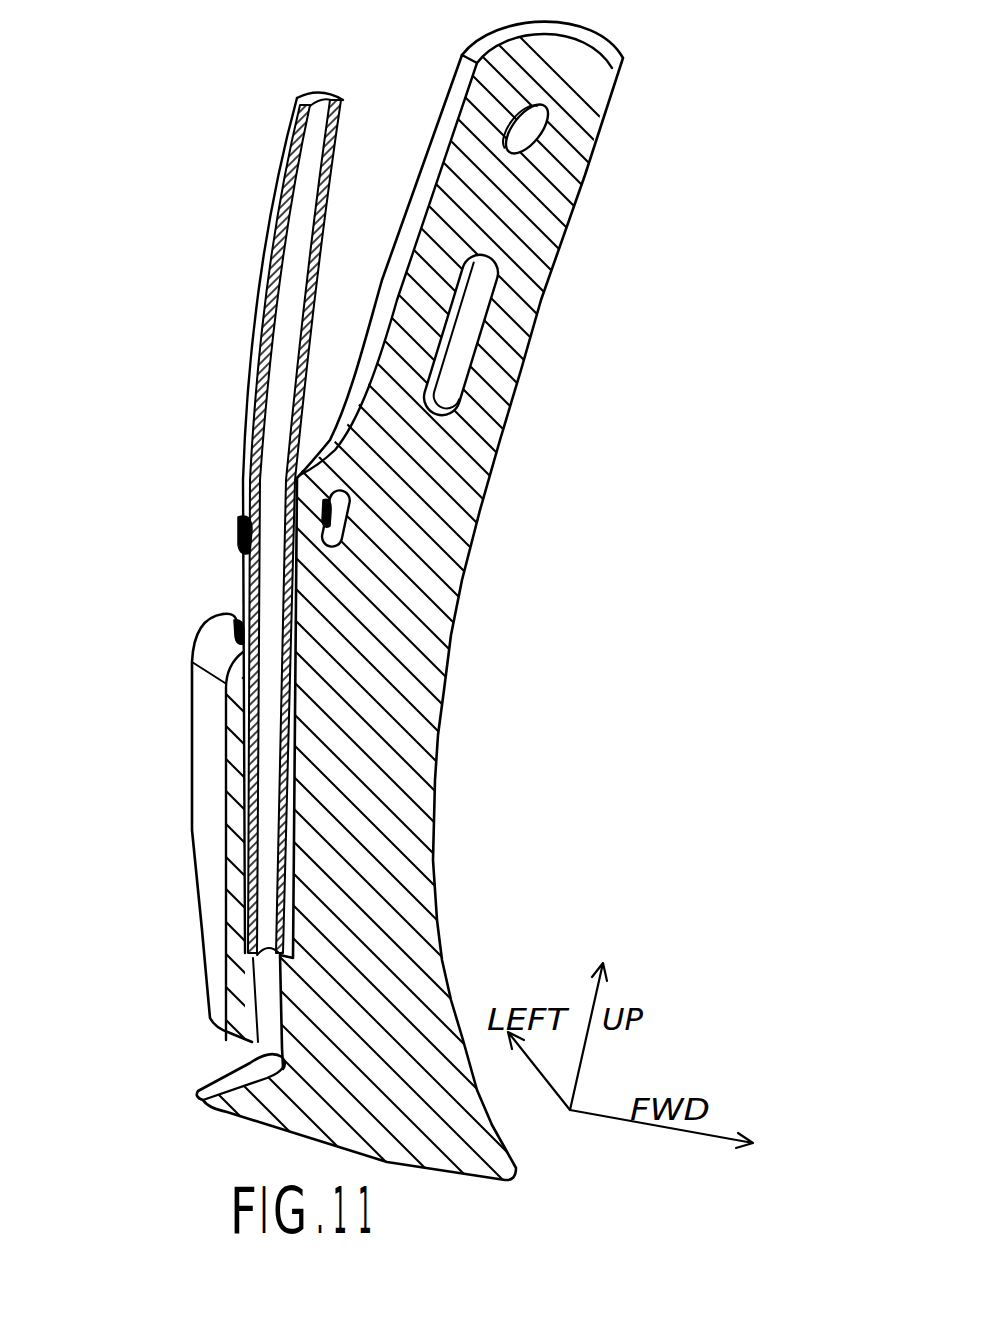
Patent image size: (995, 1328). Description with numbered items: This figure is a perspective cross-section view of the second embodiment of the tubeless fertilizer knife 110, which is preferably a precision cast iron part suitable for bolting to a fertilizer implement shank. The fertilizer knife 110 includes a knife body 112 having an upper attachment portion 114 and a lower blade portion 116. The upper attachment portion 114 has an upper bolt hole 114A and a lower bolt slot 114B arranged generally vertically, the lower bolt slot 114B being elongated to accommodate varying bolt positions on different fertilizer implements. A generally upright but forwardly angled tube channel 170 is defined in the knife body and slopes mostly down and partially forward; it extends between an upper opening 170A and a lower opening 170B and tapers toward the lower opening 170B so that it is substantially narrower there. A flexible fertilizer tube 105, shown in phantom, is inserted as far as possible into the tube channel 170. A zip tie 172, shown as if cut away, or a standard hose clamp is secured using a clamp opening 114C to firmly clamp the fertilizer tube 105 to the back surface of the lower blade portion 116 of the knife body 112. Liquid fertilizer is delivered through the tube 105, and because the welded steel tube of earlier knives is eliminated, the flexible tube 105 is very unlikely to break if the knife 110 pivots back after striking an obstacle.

The flexible fertilizer tube 105 is at (275, 370).
The fertilizer knife 110 is at (613, 278).
The knife body 112 is at (511, 563).
The upper attachment portion 114 is at (467, 207).
The upper bolt hole 114A is at (546, 133).
The lower bolt slot 114B is at (467, 367).
The clamp opening 114C is at (352, 509).
The lower blade portion 116 is at (418, 857).
The tube channel 170 is at (250, 744).
The upper opening 170A is at (223, 613).
The lower opening 170B is at (255, 1054).
The zip tie 172 is at (240, 532).